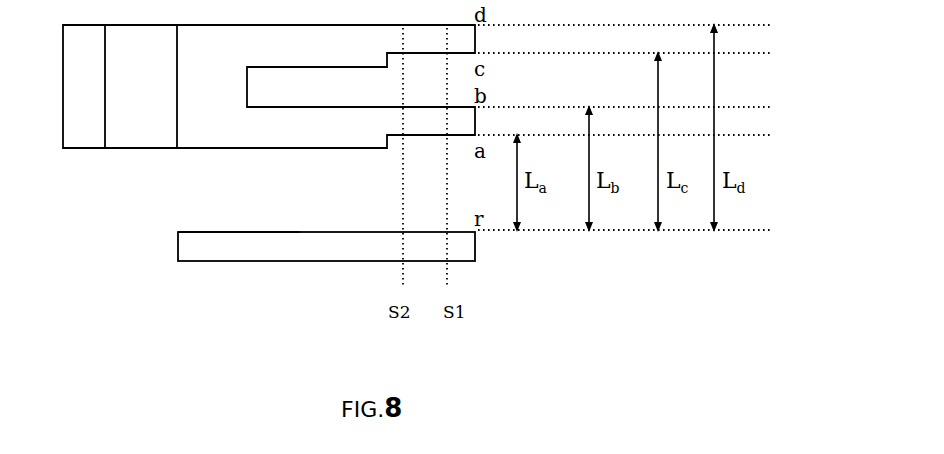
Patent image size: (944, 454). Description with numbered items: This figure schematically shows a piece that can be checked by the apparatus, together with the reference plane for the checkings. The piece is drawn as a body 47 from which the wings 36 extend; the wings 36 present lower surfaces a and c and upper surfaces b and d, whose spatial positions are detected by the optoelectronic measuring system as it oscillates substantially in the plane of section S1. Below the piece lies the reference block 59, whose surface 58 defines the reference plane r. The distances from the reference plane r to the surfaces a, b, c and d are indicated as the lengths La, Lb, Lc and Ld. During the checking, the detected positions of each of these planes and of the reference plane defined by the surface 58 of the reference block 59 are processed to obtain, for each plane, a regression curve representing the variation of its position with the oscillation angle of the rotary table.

The holder body 47 is at (203, 125).
The wings 36 is at (290, 52).
The surface 58 is at (193, 218).
The reference block 59 is at (250, 245).